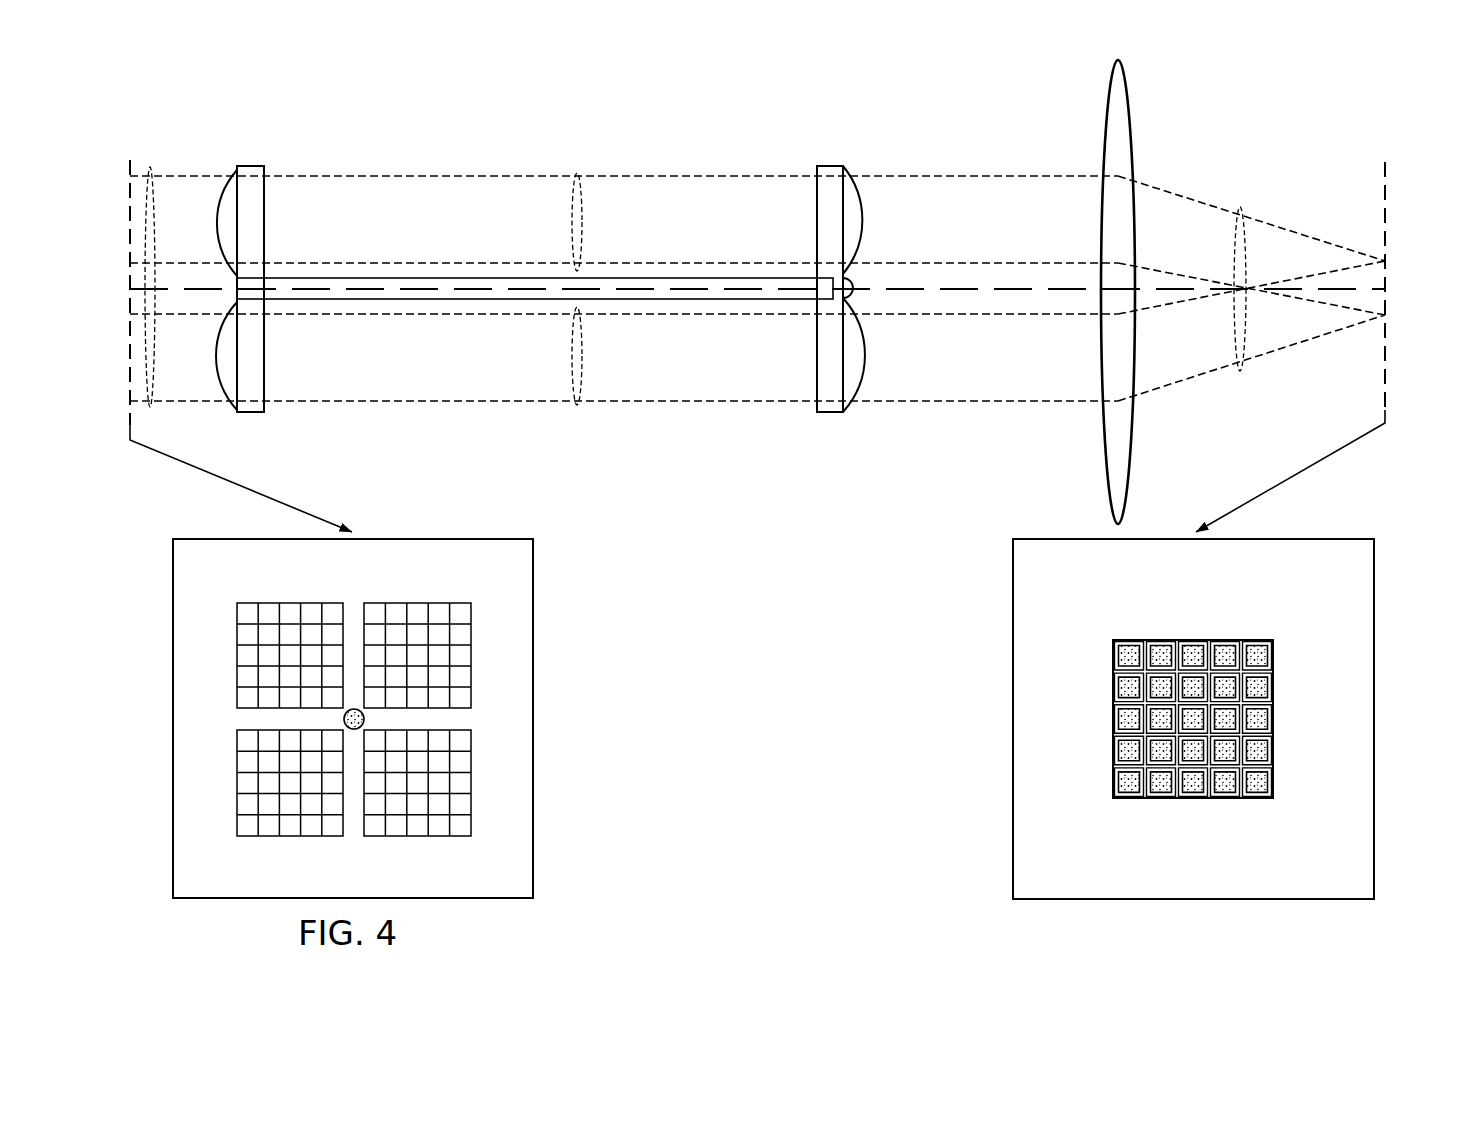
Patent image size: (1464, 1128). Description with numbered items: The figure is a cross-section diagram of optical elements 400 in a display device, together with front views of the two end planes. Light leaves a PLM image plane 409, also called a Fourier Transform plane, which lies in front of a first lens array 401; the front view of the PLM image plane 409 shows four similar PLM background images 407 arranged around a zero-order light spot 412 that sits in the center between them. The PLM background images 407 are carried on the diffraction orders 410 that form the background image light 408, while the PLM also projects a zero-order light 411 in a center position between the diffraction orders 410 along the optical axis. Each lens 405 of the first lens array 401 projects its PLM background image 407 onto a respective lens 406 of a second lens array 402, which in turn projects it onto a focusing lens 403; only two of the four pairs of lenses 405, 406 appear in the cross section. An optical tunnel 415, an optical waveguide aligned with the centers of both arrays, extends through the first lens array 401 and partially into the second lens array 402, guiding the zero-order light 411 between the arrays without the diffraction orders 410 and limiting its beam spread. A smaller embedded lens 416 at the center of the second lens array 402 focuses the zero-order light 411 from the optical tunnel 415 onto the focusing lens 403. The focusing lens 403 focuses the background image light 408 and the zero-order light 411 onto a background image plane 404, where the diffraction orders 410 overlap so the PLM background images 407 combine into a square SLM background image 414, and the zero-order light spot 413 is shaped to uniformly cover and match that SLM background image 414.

The optical elements 400 is at (700, 114).
The first lens array 401 is at (250, 163).
The second lens array 402 is at (832, 164).
The focusing lens 403 is at (1132, 118).
The background image plane 404 is at (1388, 184).
The lenses 405 is at (224, 198).
The lenses 406 is at (858, 218).
The PLM background image 407 is at (290, 602).
The background image light 408 is at (150, 167).
The PLM image plane 409 is at (126, 209).
The diffraction orders 410 is at (577, 172).
The zero-order light 411 is at (199, 286).
The zero-order light spot 412 is at (344, 719).
The zero-order light spot 413 is at (1225, 790).
The SLM background image 414 is at (1193, 640).
The optical tunnel 415 is at (452, 304).
The embedded lens 416 is at (851, 294).